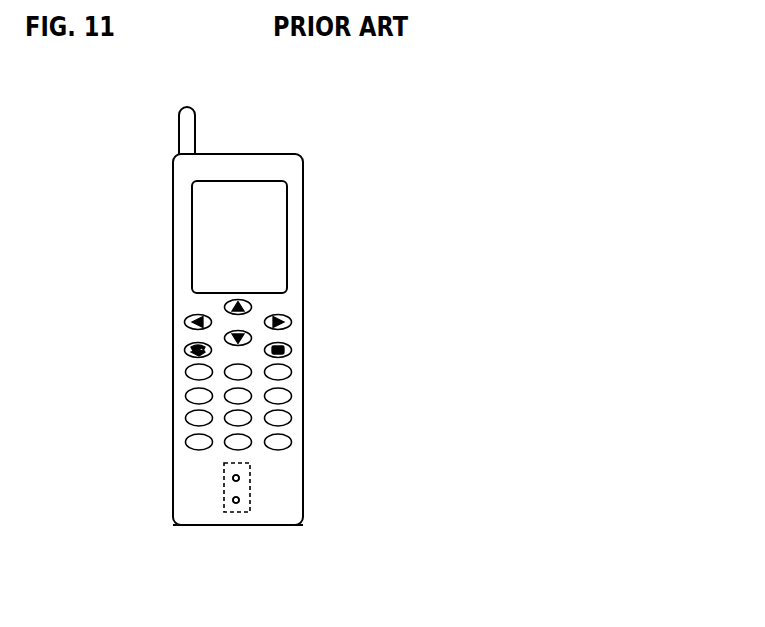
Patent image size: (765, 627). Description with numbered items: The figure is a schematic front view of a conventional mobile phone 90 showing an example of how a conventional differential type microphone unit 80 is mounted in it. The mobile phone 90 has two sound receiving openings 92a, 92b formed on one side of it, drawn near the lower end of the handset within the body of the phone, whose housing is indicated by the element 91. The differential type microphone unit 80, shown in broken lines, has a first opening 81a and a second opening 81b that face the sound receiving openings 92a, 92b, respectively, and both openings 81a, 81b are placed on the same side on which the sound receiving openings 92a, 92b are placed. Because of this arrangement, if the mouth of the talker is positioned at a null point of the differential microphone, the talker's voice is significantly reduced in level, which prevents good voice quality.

The mobile phone 90 is at (306, 302).
The housing 91 is at (283, 510).
The differential type microphone unit 80 is at (223, 478).
The first opening 81a is at (233, 479).
The second opening 81b is at (233, 501).
The sound receiving opening 92a is at (240, 478).
The sound receiving opening 92b is at (240, 500).